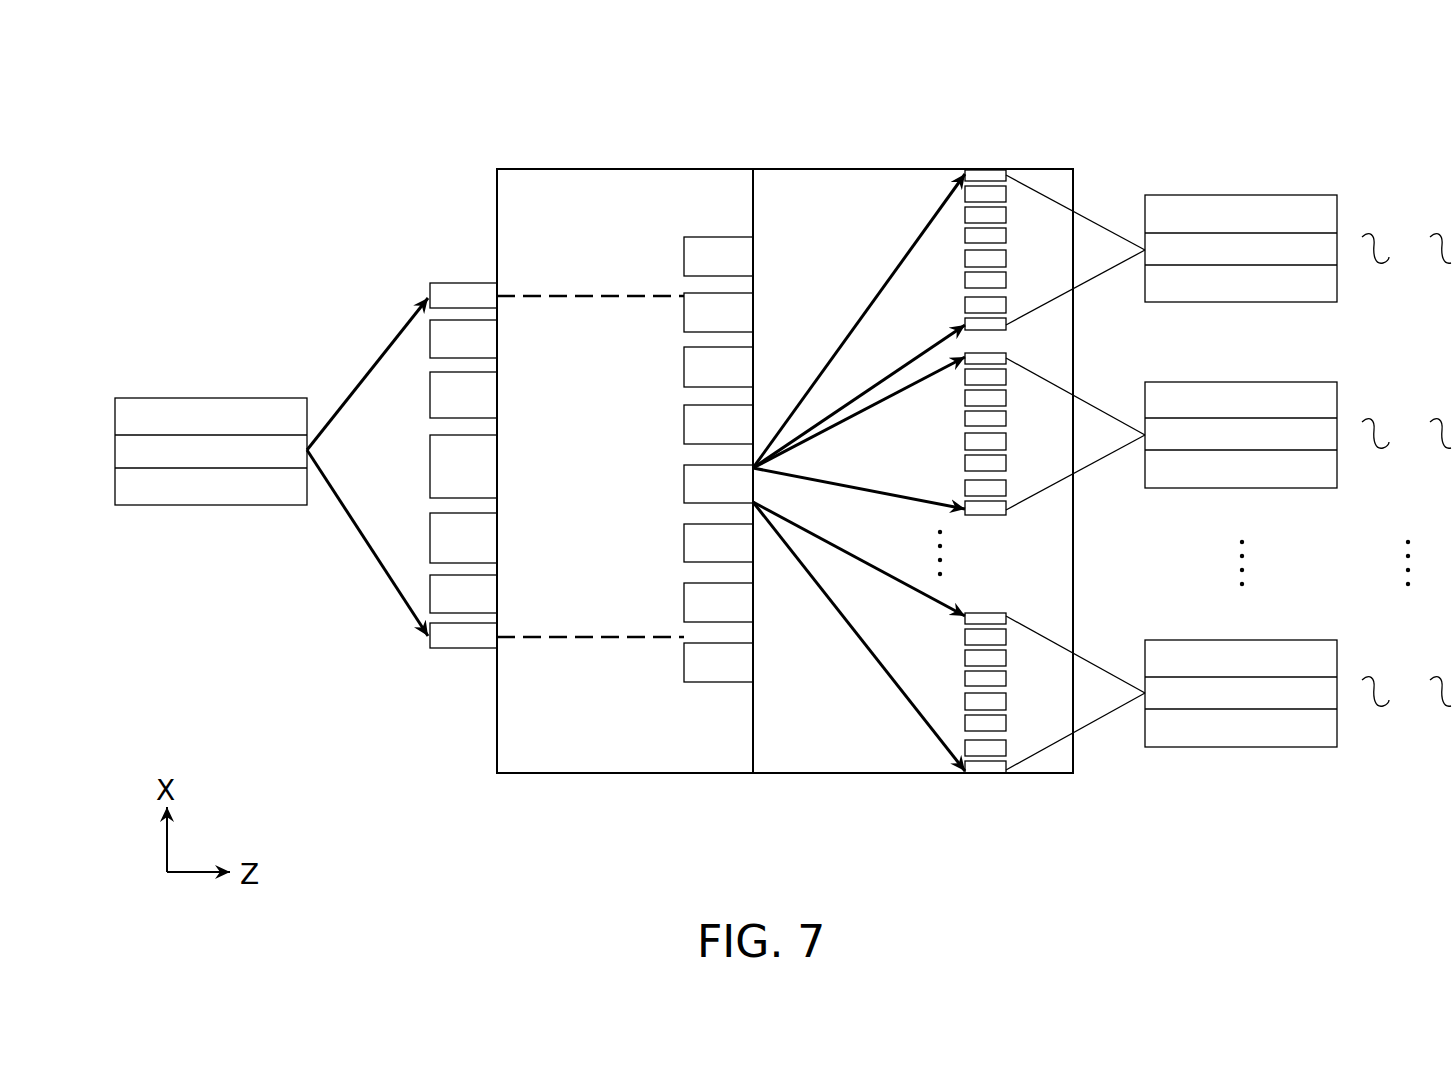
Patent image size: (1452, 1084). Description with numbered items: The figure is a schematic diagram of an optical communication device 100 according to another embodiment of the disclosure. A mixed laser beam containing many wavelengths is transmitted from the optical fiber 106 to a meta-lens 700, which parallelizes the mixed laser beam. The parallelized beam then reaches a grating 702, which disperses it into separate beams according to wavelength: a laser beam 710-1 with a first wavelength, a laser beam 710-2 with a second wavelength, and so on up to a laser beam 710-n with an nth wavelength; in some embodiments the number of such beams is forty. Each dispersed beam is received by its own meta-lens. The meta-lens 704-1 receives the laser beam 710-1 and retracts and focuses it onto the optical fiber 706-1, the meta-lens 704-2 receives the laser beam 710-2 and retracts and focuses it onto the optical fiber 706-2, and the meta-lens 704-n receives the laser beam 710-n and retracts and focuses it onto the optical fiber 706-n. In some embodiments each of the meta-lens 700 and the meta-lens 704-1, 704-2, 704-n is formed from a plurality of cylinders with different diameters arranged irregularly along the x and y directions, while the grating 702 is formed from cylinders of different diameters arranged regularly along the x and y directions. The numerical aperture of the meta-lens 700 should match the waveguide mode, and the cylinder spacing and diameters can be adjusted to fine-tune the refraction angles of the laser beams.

The optical communication device 100 is at (133, 75).
The optical fiber 106 is at (212, 490).
The meta-lens 700 is at (462, 295).
The grating 702 is at (718, 250).
The meta-lens 704-1 is at (985, 168).
The meta-lens 704-2 is at (1006, 350).
The meta-lens 704-n is at (985, 775).
The optical fiber 706-1 is at (1197, 195).
The optical fiber 706-2 is at (1197, 382).
The optical fiber 706-n is at (1197, 747).
The laser beam 710-1 is at (883, 318).
The laser beam 710-2 is at (892, 483).
The laser beam 710-n is at (860, 600).